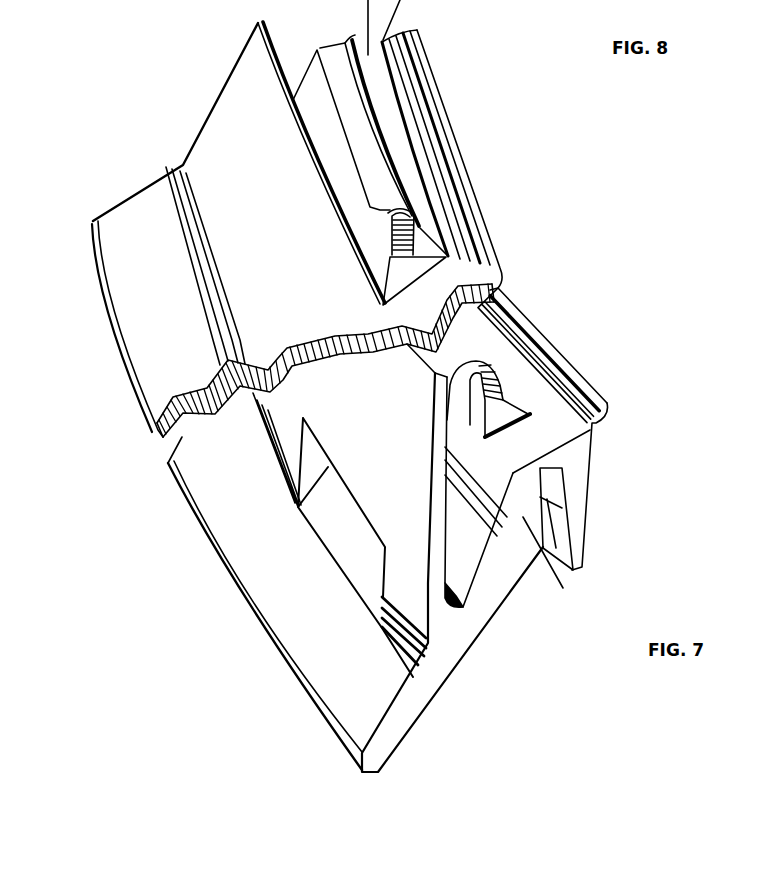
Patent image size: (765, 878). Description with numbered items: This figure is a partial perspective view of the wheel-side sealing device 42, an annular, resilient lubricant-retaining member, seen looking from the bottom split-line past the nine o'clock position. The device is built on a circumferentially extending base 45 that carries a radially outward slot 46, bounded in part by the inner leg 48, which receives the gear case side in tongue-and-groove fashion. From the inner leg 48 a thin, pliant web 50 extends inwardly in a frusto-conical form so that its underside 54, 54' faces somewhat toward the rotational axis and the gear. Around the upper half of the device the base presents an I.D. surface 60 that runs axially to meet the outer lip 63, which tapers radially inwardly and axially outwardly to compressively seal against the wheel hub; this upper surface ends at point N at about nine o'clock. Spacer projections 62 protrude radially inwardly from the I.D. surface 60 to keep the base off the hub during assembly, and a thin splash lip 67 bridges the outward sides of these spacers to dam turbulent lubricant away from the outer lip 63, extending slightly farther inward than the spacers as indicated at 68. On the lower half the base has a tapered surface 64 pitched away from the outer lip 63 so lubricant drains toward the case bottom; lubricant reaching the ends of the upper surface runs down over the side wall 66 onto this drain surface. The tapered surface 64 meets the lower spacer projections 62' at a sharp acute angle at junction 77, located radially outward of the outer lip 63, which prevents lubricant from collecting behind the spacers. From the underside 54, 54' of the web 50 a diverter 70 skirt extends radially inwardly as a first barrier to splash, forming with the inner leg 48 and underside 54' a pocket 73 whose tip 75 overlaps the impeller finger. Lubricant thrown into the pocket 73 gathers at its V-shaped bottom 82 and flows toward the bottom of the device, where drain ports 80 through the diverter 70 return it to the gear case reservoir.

The sealing device 42 is at (118, 380).
The base 45 is at (581, 454).
The slot 46 is at (555, 498).
The inner leg 48 is at (332, 127).
The web 50 is at (407, 705).
The underside of the web 54 is at (297, 615).
The underside of the web 54' is at (476, 505).
The I.D. surface 60 is at (344, 106).
The spacer projection 62 is at (384, 232).
The lower spacer projection 62' is at (487, 400).
The outer lip 63 is at (427, 82).
The tapered surface 64 is at (437, 277).
The side wall 66 is at (430, 259).
The splash lip 67 is at (348, 35).
The lip extension beyond spacers 68 is at (424, 207).
The diverter 70 is at (298, 237).
The pocket 73 is at (482, 538).
The diverter tip 75 is at (256, 26).
The junction 77 is at (531, 398).
The drain ports 80 is at (336, 535).
The pocket bottom 82 is at (468, 615).
The point N is at (508, 238).